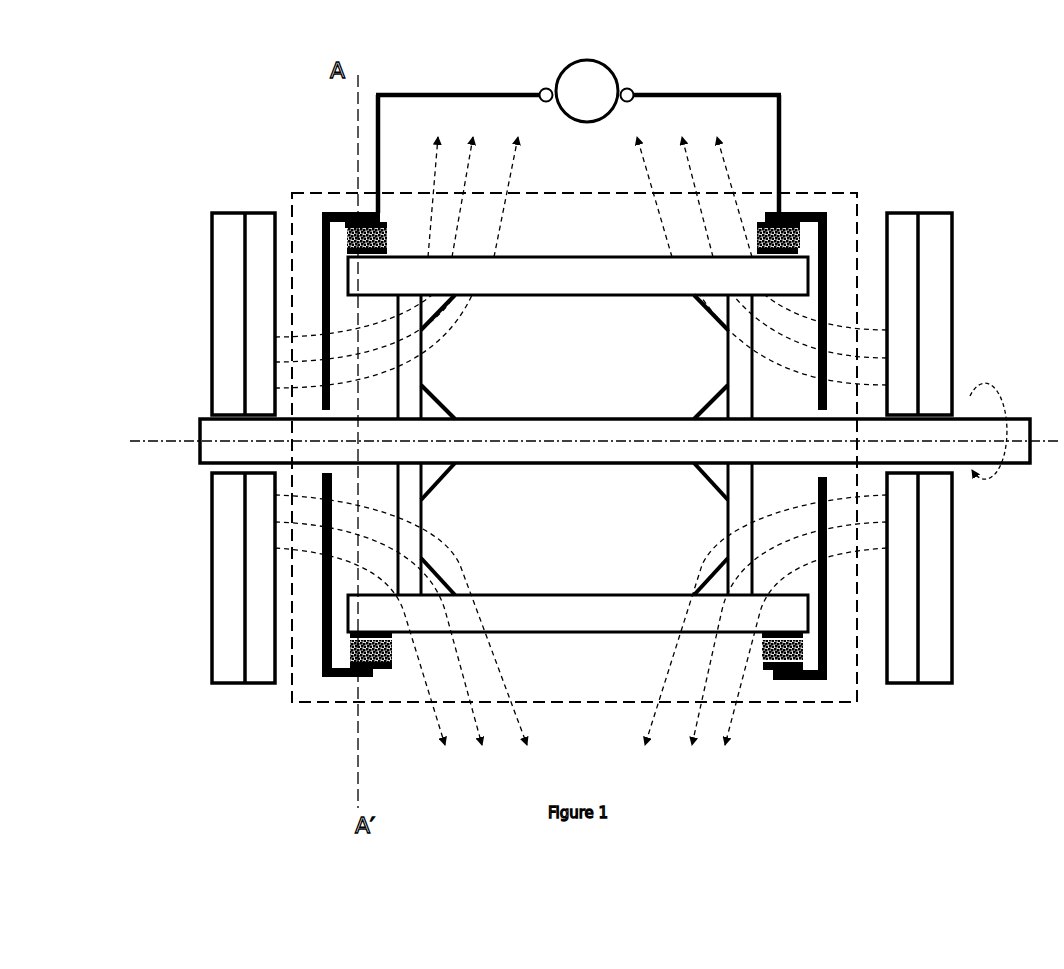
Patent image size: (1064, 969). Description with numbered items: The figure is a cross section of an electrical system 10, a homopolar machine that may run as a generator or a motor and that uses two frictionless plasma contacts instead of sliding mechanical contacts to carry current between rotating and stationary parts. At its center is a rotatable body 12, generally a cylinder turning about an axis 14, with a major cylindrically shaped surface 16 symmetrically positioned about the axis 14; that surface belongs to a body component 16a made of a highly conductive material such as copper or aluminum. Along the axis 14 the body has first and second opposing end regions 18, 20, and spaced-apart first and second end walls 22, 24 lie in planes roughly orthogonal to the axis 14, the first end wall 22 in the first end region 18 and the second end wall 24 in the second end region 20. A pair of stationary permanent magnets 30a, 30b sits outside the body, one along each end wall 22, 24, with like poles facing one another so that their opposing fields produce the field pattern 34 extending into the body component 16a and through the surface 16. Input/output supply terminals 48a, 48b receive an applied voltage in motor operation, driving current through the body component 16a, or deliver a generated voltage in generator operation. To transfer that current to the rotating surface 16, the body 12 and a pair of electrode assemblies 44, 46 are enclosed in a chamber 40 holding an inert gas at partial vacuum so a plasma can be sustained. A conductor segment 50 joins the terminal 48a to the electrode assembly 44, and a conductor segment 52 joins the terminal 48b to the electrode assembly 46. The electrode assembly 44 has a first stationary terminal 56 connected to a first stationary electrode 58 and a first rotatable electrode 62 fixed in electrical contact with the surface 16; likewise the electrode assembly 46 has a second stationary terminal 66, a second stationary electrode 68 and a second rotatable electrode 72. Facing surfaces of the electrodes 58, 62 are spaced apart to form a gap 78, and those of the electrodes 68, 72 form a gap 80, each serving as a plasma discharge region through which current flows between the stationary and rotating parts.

The electrical system 10 is at (180, 94).
The rotatable body 12 is at (323, 287).
The axis 14 is at (162, 441).
The cylindrically shaped surface 16 is at (292, 188).
The body component 16a is at (578, 325).
The first end region 18 is at (403, 633).
The second end region 20 is at (693, 633).
The first end wall 22 is at (422, 519).
The second end wall 24 is at (740, 516).
The stationary permanent magnet 30a is at (213, 598).
The stationary permanent magnet 30b is at (953, 287).
The field pattern 34 is at (445, 330).
The chamber 40 is at (832, 192).
The electrode assembly 44 is at (348, 220).
The electrode assembly 46 is at (773, 214).
The input/output supply terminal 48a is at (543, 90).
The input/output supply terminal 48b is at (630, 90).
The conductor segment 50 is at (380, 150).
The conductor segment 52 is at (335, 213).
The first stationary terminal 56 is at (373, 214).
The first stationary electrode 58 is at (380, 224).
The first rotatable electrode 62 is at (387, 253).
The second stationary terminal 66 is at (790, 212).
The second stationary electrode 68 is at (762, 221).
The second rotatable electrode 72 is at (755, 248).
The gap 78 is at (320, 213).
The gap 80 is at (827, 212).